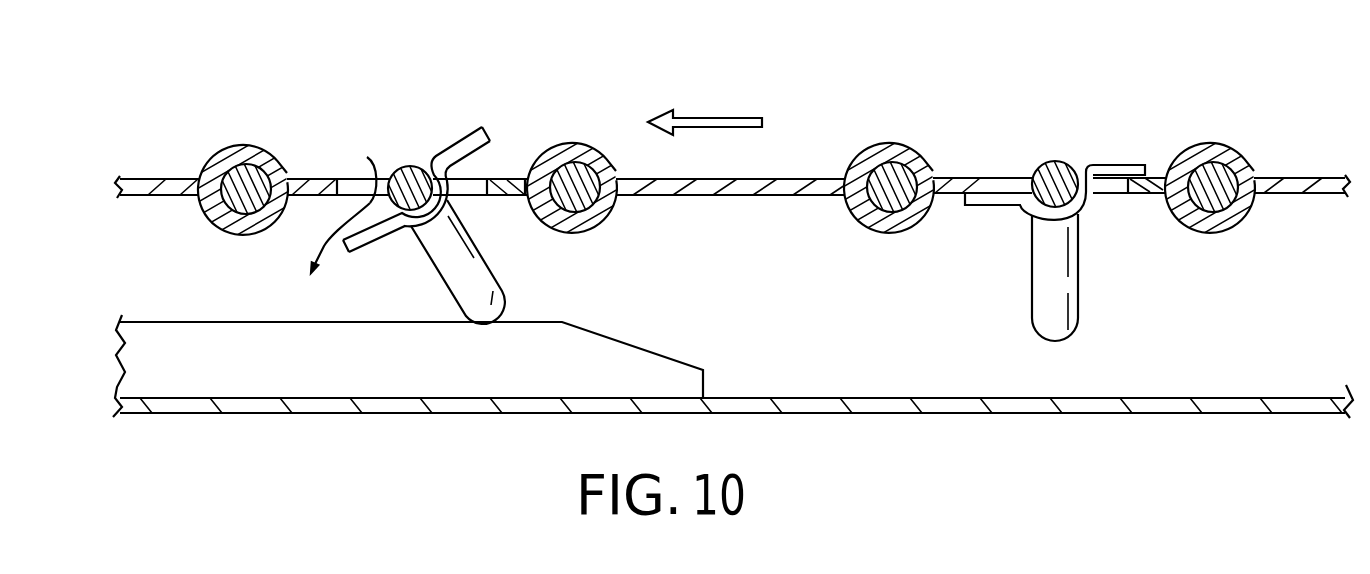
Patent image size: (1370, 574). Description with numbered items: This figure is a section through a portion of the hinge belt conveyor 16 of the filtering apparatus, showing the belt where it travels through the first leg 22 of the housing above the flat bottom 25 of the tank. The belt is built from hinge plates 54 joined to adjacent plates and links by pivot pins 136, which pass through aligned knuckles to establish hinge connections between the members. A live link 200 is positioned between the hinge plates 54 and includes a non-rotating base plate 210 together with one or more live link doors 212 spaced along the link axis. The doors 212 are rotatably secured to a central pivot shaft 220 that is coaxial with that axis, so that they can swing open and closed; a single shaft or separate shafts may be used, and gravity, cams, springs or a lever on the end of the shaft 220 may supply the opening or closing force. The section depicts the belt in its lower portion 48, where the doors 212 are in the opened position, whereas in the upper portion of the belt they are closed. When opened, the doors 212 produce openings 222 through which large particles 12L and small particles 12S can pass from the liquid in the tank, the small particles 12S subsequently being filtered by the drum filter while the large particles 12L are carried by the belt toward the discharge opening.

The lower portion 48 is at (165, 157).
The hinge plates 54 is at (771, 176).
The pivot pin 136 is at (238, 178).
The central pivot shaft 220 is at (410, 173).
The first leg 22 is at (1056, 165).
The live link doors 212 is at (468, 132).
The base plate 210 is at (508, 190).
The live link 200 is at (505, 158).
The openings 222 is at (357, 183).
The hinge belt conveyor 16 is at (1017, 127).
The flat bottom 25 is at (1033, 403).
The large particles 12L is at (250, 249).
The small particles 12S is at (328, 240).